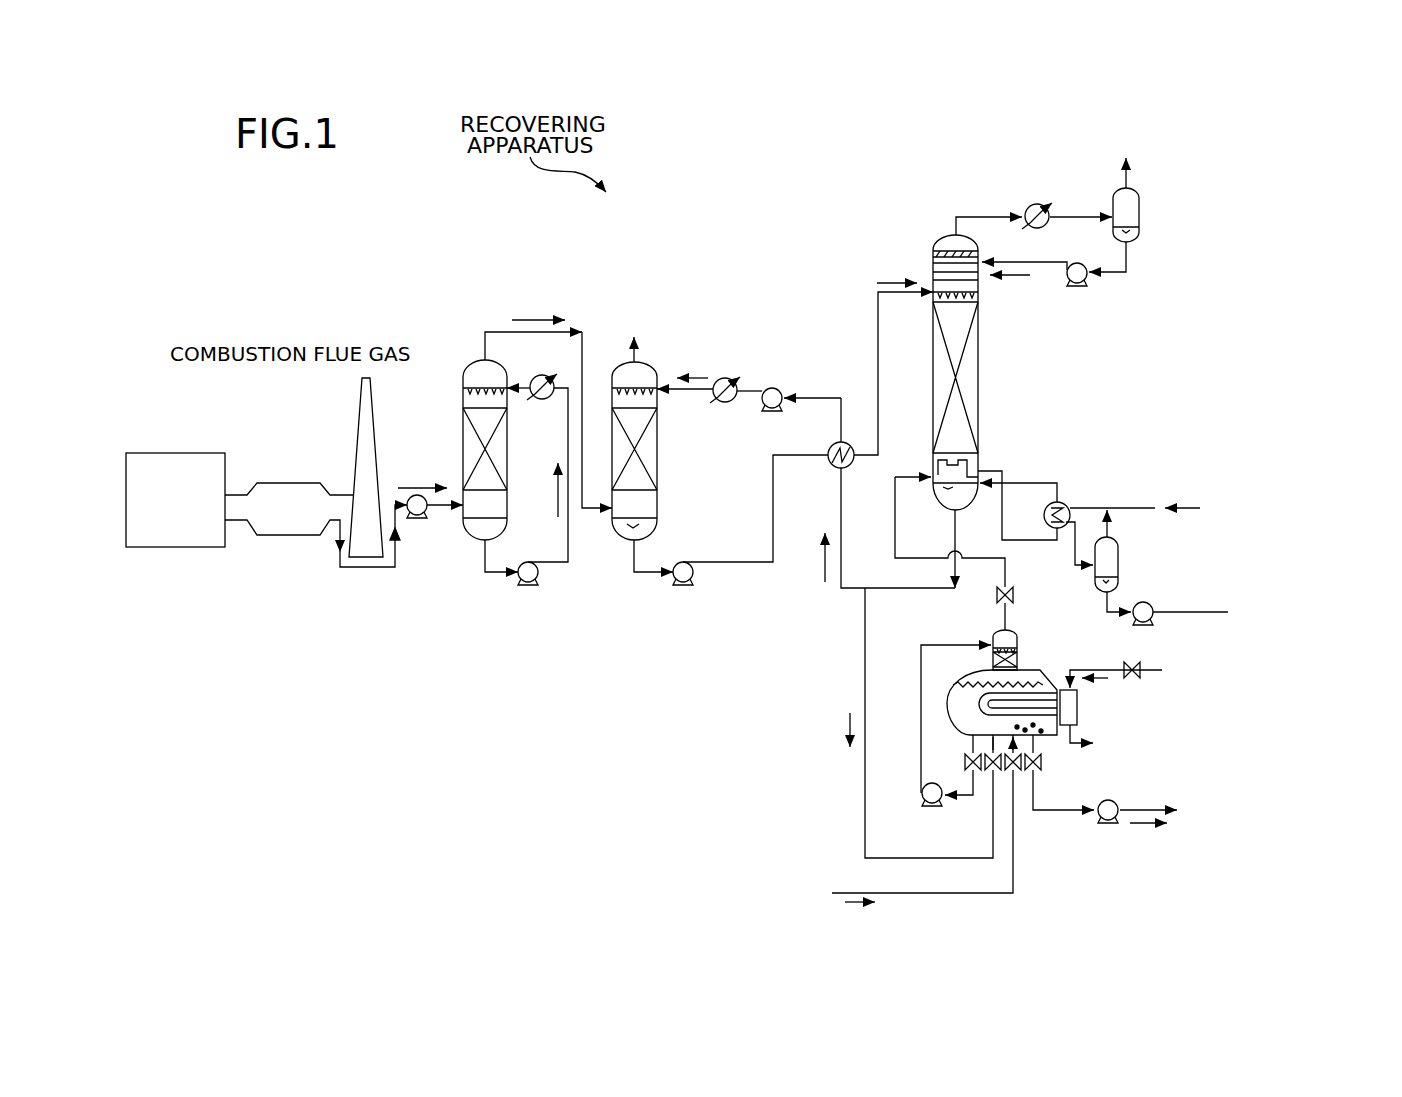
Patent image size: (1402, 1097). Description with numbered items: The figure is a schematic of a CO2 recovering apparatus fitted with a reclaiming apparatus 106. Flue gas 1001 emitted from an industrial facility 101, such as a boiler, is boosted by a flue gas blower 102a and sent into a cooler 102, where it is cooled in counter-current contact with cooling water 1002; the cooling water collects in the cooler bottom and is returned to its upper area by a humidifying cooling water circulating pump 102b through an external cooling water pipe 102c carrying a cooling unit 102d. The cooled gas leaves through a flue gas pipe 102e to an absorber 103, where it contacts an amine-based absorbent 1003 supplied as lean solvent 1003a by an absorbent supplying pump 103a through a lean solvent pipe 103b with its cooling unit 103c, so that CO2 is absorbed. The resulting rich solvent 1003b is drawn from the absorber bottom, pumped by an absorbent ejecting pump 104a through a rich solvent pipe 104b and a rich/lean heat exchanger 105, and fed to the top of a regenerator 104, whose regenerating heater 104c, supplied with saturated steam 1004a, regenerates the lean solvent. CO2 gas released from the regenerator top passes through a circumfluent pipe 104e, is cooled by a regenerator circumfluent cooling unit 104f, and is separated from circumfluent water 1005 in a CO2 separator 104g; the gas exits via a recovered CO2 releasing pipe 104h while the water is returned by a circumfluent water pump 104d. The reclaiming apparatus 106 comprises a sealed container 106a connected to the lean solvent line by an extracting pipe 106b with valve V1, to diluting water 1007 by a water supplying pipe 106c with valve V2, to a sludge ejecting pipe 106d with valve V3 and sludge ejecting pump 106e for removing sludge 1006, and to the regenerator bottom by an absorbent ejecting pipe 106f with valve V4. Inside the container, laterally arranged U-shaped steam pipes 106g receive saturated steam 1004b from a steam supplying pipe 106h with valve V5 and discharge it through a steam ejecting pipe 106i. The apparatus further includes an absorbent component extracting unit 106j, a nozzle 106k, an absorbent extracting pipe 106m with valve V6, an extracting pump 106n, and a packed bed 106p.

The industrial facility 101 is at (204, 452).
The cooler 102 is at (462, 371).
The flue gas blower 102a is at (418, 519).
The humidifying cooling water circulating pump 102b is at (528, 594).
The cooling water pipe 102c is at (569, 550).
The cooling unit 102d is at (535, 376).
The flue gas pipe 102e is at (586, 355).
The absorber 103 is at (650, 360).
The absorbent supplying pump 103a is at (775, 387).
The lean solvent pipe 103b is at (841, 396).
The cooling unit 103c is at (728, 403).
The regenerator 104 is at (950, 233).
The absorbent ejecting pump 104a is at (683, 594).
The rich solvent pipe 104b is at (878, 298).
The regenerating heater 104c is at (1063, 501).
The circumfluent water pump 104d is at (1090, 282).
The circumfluent pipe 104e is at (972, 215).
The regenerator circumfluent cooling unit 104f is at (1032, 203).
The CO2 separator 104g is at (1141, 218).
The recovered CO2 releasing pipe 104h is at (1130, 176).
The rich/lean heat exchanger 105 is at (832, 467).
The reclaiming apparatus 106 is at (1083, 758).
The sealed container 106a is at (1045, 670).
The extracting pipe 106b is at (865, 793).
The water supplying pipe 106c is at (948, 894).
The sludge ejecting pipe 106d is at (1050, 812).
The sludge ejecting pump 106e is at (1108, 826).
The absorbent ejecting pipe 106f is at (1008, 576).
The steam pipes 106g is at (948, 697).
The steam supplying pipe 106h is at (1160, 666).
The steam ejecting pipe 106i is at (1075, 745).
The absorbent component extracting unit 106j is at (1006, 650).
The nozzle 106k is at (1009, 576).
The absorbent extracting pipe 106m is at (920, 660).
The extracting pump 106n is at (932, 807).
The packed bed 106p is at (992, 660).
The flue gas 1001 is at (415, 480).
The cooling water 1002 is at (555, 470).
The absorbent 1003 is at (697, 374).
The lean solvent 1003a is at (822, 567).
The rich solvent 1003b is at (888, 278).
The saturated steam 1004a is at (1215, 507).
The saturated steam 1004b is at (1090, 682).
The circumfluent water 1005 is at (1008, 279).
The sludge 1006 is at (1148, 826).
The diluting water 1007 is at (862, 904).
The open and shut valve V1 is at (992, 775).
The open and shut valve V2 is at (1012, 776).
The open and shut valve V3 is at (1043, 762).
The open and shut valve V4 is at (997, 597).
The open and shut valve V5 is at (1143, 677).
The open and shut valve V6 is at (963, 762).